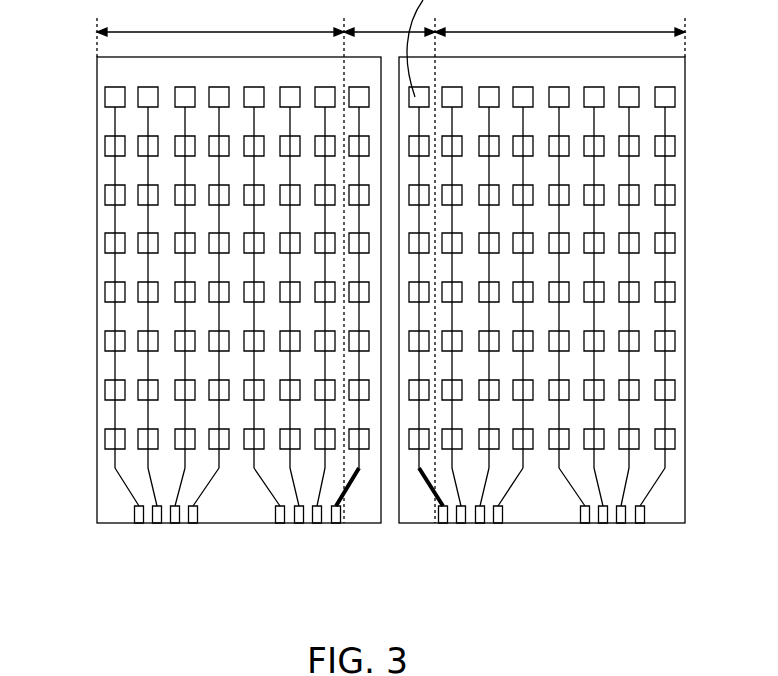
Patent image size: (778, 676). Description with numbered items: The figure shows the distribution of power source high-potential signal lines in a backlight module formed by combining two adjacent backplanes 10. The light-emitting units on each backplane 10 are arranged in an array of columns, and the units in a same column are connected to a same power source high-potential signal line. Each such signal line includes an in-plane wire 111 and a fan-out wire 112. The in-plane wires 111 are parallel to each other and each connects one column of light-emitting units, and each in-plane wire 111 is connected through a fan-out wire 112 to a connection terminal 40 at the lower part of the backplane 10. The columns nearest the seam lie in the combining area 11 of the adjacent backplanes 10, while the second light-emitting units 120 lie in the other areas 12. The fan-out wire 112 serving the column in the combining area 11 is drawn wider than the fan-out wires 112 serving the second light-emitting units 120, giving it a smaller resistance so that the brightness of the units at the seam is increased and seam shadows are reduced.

The backplane 10 is at (96, 125).
The combining area 11 is at (389, 261).
The other area 12 is at (391, 31).
The second light-emitting unit 120 is at (130, 154).
The in-plane wire 111 is at (115, 418).
The fan-out wire 112 is at (125, 492).
The connection terminal 40 is at (139, 523).